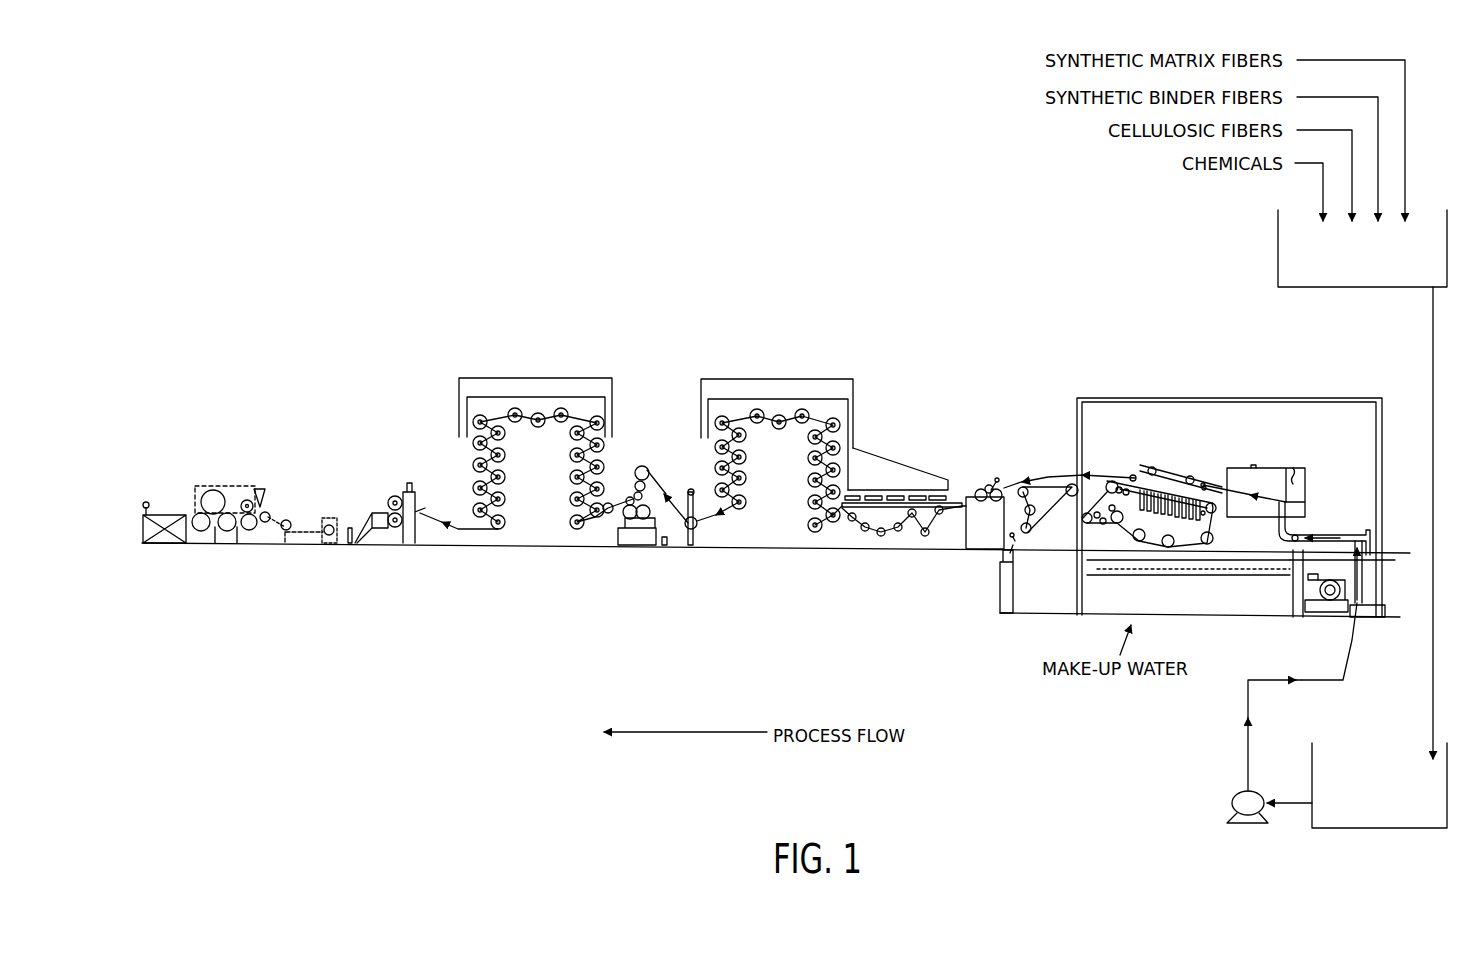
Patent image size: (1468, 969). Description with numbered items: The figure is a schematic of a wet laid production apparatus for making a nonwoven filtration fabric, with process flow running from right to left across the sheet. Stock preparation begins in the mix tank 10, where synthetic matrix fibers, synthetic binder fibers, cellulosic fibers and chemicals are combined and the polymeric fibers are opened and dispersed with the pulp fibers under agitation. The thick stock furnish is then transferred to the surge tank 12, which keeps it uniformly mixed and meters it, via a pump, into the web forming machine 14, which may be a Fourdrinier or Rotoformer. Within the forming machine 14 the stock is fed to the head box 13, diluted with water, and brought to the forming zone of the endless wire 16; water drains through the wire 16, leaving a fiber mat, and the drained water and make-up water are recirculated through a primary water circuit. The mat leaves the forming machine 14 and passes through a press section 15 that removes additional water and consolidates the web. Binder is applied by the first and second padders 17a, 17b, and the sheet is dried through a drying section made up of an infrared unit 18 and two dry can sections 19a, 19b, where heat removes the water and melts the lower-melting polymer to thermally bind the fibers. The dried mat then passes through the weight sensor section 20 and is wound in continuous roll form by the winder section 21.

The mix tank 10 is at (1276, 233).
The surge tank 12 is at (1427, 830).
The head box 13 is at (1265, 460).
The web forming machine 14 is at (1343, 396).
The press section 15 is at (1048, 467).
The endless wire 16 is at (1133, 466).
The first padder 17a is at (990, 472).
The second padder 17b is at (669, 545).
The infrared unit 18 is at (913, 456).
The first dry can section 19a is at (779, 377).
The second dry can section 19b is at (535, 376).
The weight sensor section 20 is at (333, 511).
The winder section 21 is at (231, 488).